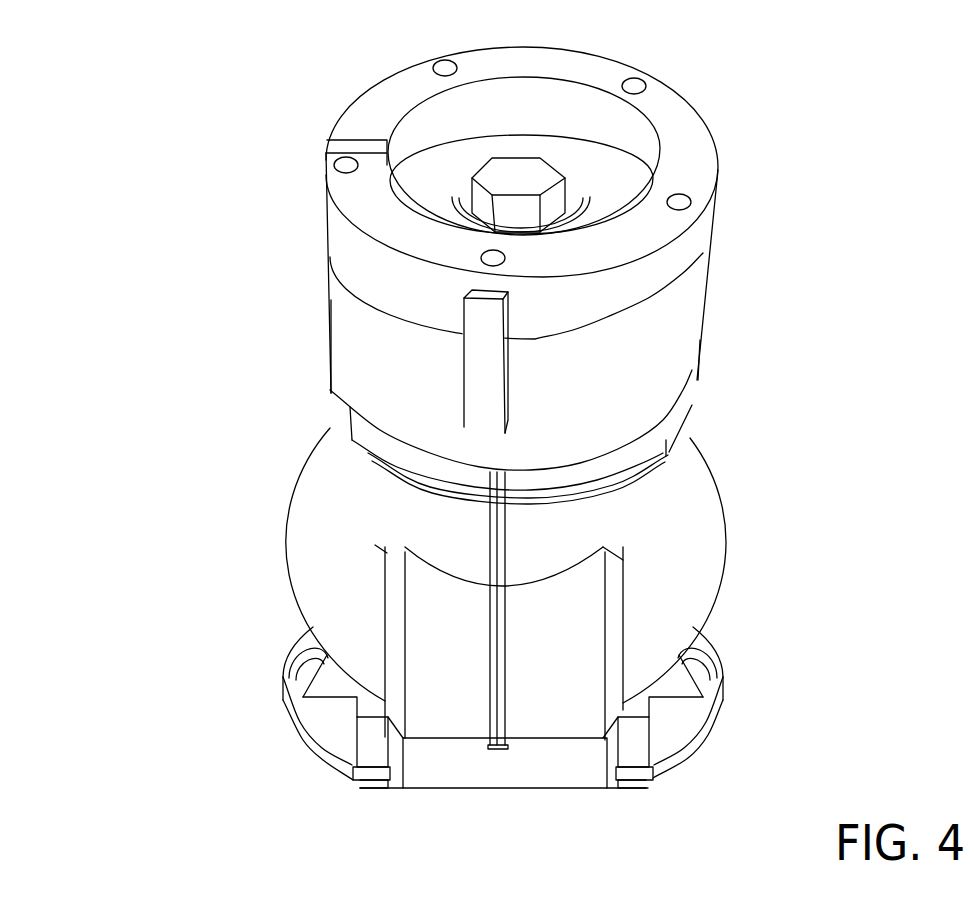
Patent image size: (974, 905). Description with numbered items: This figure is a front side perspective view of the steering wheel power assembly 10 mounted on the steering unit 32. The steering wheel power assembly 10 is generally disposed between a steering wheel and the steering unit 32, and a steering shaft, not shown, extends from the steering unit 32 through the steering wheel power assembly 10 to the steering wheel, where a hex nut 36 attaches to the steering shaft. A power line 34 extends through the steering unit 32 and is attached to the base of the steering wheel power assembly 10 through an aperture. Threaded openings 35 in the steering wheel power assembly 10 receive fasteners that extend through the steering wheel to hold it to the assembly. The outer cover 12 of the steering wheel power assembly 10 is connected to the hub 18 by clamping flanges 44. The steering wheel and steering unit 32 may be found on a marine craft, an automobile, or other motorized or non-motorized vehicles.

The steering wheel power assembly 10 is at (677, 338).
The outer cover 12 is at (690, 367).
The hub 18 is at (714, 222).
The steering unit 32 is at (687, 555).
The power line 34 is at (487, 548).
The threaded openings 35 is at (643, 84).
The hex nut 36 is at (528, 178).
The clamping flanges 44 is at (470, 362).